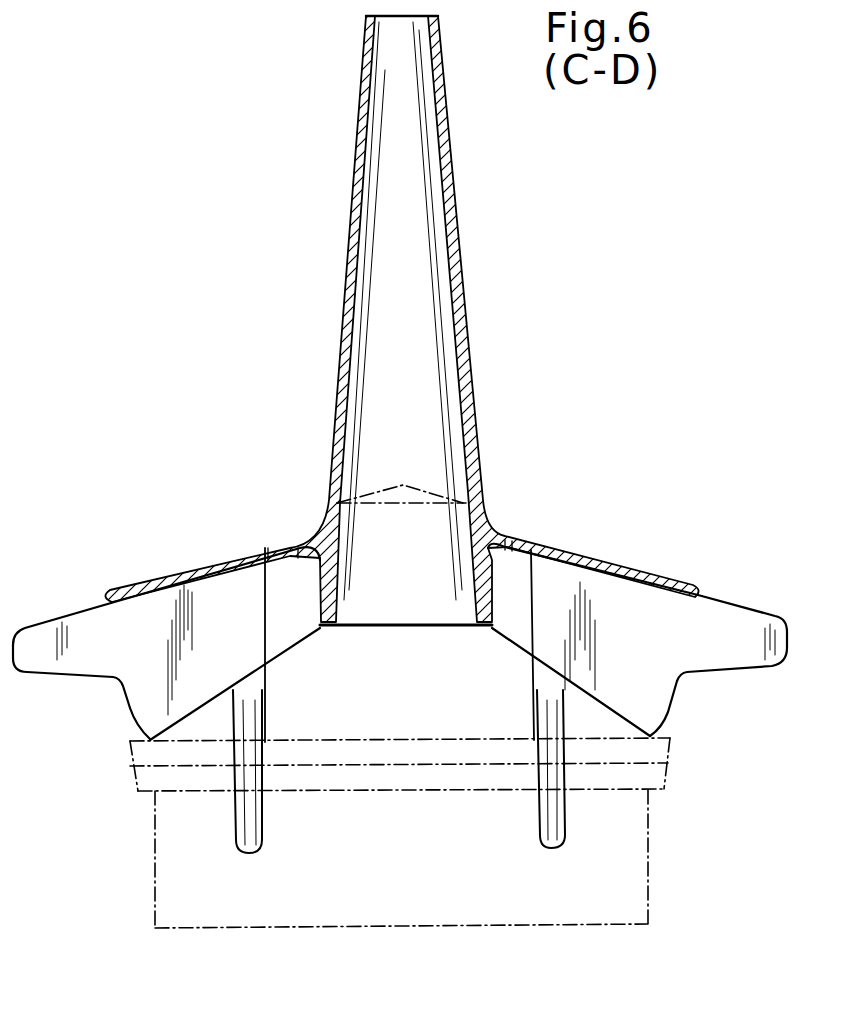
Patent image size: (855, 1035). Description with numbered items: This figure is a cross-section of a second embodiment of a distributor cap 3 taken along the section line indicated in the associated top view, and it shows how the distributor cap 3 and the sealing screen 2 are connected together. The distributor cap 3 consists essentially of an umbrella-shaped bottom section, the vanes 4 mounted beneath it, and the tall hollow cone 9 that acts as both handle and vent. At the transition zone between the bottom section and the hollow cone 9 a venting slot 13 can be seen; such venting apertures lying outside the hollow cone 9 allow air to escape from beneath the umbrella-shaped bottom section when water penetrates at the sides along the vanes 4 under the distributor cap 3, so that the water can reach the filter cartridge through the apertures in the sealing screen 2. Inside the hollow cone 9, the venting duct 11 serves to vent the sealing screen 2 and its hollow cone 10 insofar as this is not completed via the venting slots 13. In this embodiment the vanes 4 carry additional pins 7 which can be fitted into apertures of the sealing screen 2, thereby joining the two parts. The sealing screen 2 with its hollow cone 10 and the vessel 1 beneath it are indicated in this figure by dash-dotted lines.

The vessel 1 is at (180, 857).
The sealing screen 2 is at (455, 693).
The distributor cap 3 is at (246, 454).
The vanes 4 is at (662, 620).
The pins 7 is at (250, 855).
The hollow cone 9 is at (457, 206).
The hollow cone 10 is at (428, 540).
The venting duct 11 is at (412, 283).
The venting slot 13 is at (288, 548).